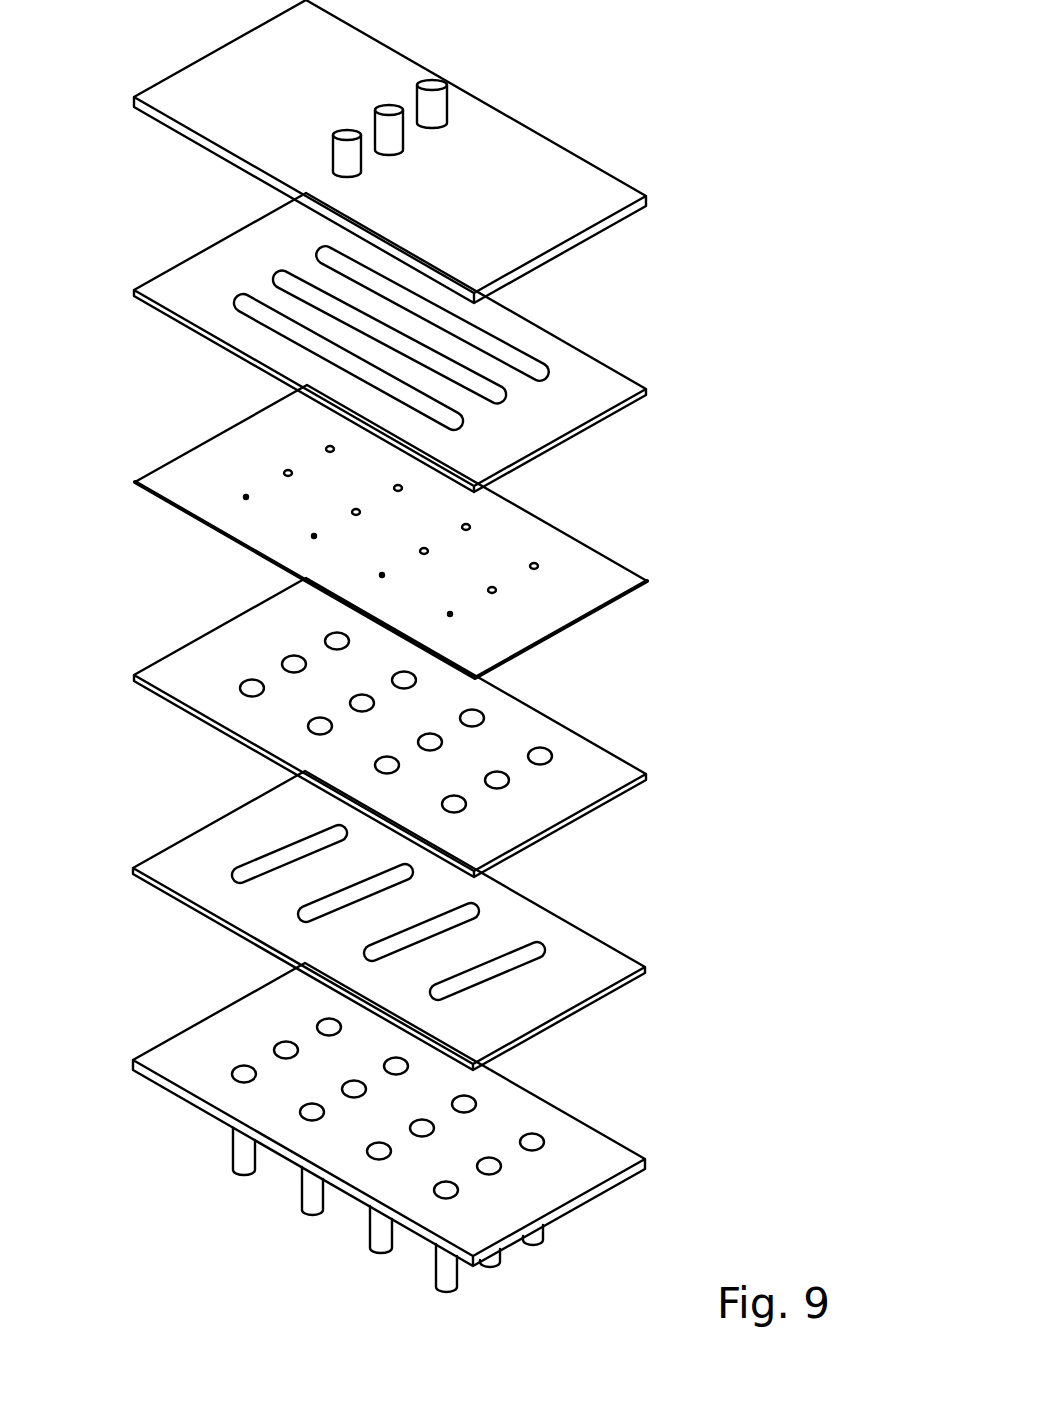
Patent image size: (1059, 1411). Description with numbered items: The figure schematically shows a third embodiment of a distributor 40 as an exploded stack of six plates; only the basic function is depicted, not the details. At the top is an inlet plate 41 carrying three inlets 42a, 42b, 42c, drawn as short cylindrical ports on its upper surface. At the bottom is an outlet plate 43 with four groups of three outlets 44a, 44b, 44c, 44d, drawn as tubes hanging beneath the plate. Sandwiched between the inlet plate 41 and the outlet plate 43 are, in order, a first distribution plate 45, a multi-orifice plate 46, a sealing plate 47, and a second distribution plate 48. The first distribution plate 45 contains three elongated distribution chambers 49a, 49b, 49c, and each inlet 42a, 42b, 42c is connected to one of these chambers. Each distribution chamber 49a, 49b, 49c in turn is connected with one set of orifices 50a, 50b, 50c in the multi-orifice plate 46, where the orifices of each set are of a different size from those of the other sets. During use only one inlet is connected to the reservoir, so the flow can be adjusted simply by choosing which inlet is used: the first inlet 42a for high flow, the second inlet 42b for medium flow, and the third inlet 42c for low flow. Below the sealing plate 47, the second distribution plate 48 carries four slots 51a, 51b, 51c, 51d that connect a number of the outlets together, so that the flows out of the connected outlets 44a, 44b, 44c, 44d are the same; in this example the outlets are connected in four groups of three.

The distributor 40 is at (590, 60).
The inlet plate 41 is at (592, 168).
The first inlet 42a is at (430, 80).
The second inlet 42b is at (396, 136).
The third inlet 42c is at (350, 132).
The outlet plate 43 is at (624, 1150).
The outlets 44a is at (538, 1247).
The outlets 44b is at (378, 1242).
The outlets 44c is at (306, 1200).
The outlets 44d is at (238, 1158).
The first distribution plate 45 is at (610, 374).
The multi-orifice plate 46 is at (623, 575).
The sealing plate 47 is at (610, 752).
The second distribution plate 48 is at (605, 957).
The distribution chamber 49a is at (518, 356).
The distribution chamber 49b is at (495, 402).
The distribution chamber 49c is at (237, 307).
The set of orifices 50a is at (535, 566).
The set of orifices 50b is at (492, 589).
The set of orifices 50c is at (247, 497).
The slot 51a is at (543, 938).
The slot 51b is at (475, 900).
The slot 51c is at (295, 927).
The slot 51d is at (245, 867).